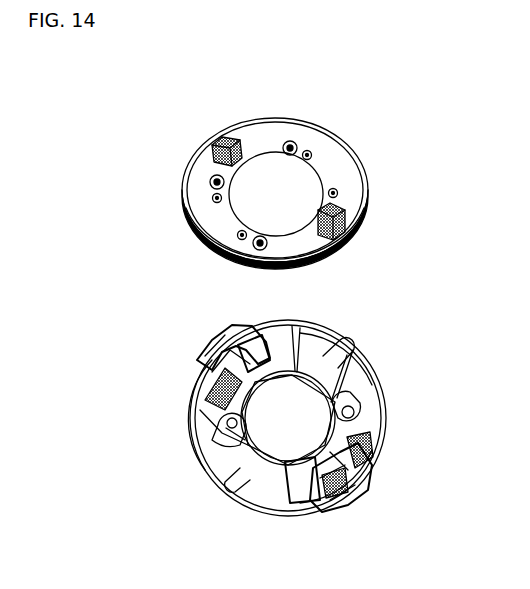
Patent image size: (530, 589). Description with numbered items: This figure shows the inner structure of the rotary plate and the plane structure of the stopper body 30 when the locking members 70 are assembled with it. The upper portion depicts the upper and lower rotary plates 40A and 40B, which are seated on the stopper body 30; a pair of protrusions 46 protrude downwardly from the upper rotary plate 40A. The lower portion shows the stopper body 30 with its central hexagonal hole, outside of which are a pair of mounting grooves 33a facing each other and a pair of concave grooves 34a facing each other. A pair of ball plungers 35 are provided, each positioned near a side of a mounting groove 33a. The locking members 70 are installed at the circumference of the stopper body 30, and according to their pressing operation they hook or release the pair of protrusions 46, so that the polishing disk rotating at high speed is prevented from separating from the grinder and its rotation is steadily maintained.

The stopper body 30 is at (193, 480).
The mounting groove 33a is at (352, 352).
The concave groove 34a is at (195, 413).
The ball plunger 35 is at (228, 427).
The upper rotary plate 40A is at (210, 252).
The lower rotary plate 40B is at (327, 155).
The protrusion 46 is at (227, 142).
The locking member 70 is at (187, 355).